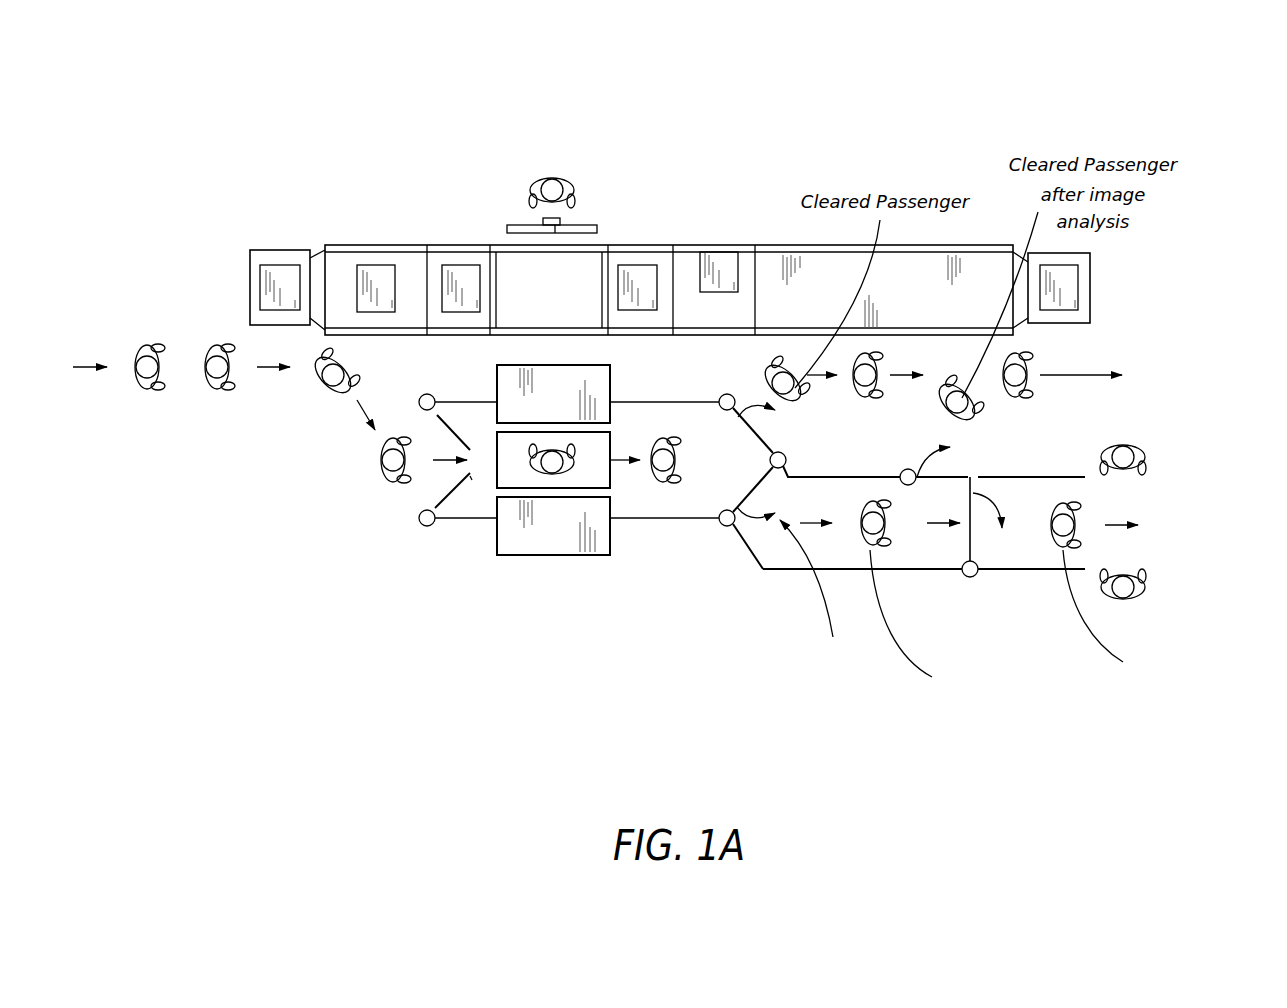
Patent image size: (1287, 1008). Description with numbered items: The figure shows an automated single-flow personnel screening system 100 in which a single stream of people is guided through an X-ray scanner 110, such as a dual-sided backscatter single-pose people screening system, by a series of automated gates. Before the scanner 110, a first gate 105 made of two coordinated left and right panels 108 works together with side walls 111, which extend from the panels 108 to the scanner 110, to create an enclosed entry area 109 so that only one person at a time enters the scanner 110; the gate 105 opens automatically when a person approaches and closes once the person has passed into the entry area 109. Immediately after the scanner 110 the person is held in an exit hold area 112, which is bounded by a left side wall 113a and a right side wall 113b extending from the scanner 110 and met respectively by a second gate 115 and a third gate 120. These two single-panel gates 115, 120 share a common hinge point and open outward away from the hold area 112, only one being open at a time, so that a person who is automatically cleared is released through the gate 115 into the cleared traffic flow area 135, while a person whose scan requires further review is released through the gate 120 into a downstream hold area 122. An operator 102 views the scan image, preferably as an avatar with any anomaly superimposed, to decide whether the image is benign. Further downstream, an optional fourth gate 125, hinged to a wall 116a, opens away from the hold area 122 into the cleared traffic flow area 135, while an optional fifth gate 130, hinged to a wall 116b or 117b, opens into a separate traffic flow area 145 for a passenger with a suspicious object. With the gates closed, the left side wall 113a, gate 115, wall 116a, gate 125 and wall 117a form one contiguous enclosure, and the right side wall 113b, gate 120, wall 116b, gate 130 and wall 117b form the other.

The automated single-flow personnel screening system 100 is at (143, 102).
The operator 102 is at (540, 178).
The first gate 105 is at (422, 487).
The panels 108 is at (445, 493).
The entry area 109 is at (473, 478).
The X-ray scanner 110 is at (507, 530).
The side walls 111 is at (487, 402).
The hold area 112 is at (638, 543).
The left side wall 113a is at (710, 396).
The right side wall 113b is at (652, 520).
The second gate 115 is at (765, 442).
The wall 116a is at (803, 477).
The wall 116b is at (790, 570).
The wall 117a is at (1012, 477).
The wall 117b is at (1027, 572).
The third gate 120 is at (762, 480).
The hold area 122 is at (782, 557).
The fourth gate 125 is at (948, 477).
The fifth gate 130 is at (963, 545).
The traffic flow area 135 is at (1070, 373).
The traffic flow area 145 is at (1181, 540).